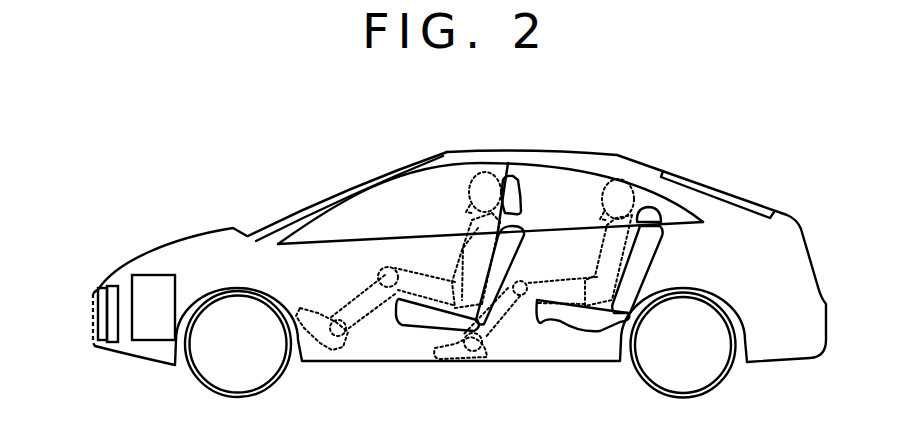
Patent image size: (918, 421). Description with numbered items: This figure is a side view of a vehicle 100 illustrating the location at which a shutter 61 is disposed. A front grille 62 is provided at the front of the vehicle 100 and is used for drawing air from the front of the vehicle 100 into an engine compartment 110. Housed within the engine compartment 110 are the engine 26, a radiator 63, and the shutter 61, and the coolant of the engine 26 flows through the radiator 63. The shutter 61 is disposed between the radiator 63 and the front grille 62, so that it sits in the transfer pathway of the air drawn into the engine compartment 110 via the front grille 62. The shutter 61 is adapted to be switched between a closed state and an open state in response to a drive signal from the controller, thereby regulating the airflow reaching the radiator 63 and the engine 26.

The vehicle 100 is at (286, 200).
The engine compartment 110 is at (164, 263).
The engine 26 is at (168, 318).
The front grille 62 is at (91, 300).
The shutter 61 is at (100, 345).
The radiator 63 is at (112, 338).